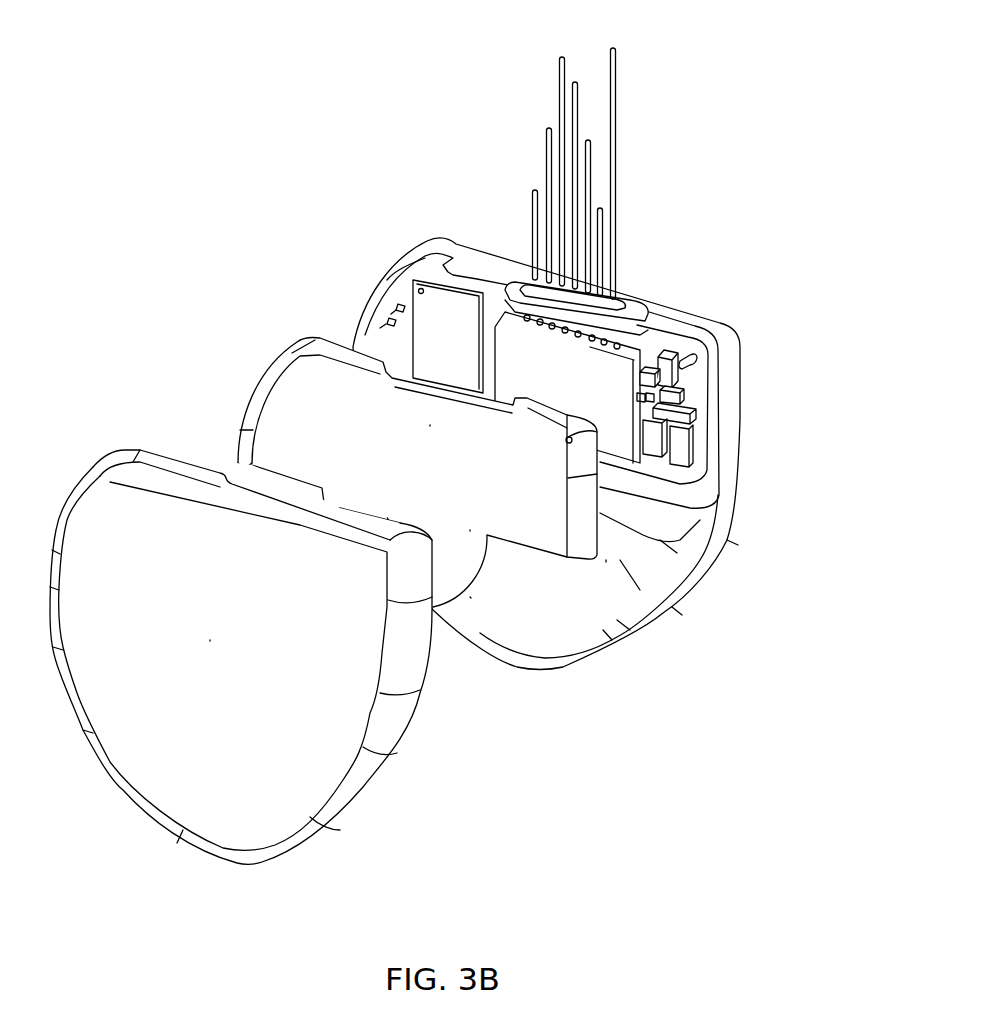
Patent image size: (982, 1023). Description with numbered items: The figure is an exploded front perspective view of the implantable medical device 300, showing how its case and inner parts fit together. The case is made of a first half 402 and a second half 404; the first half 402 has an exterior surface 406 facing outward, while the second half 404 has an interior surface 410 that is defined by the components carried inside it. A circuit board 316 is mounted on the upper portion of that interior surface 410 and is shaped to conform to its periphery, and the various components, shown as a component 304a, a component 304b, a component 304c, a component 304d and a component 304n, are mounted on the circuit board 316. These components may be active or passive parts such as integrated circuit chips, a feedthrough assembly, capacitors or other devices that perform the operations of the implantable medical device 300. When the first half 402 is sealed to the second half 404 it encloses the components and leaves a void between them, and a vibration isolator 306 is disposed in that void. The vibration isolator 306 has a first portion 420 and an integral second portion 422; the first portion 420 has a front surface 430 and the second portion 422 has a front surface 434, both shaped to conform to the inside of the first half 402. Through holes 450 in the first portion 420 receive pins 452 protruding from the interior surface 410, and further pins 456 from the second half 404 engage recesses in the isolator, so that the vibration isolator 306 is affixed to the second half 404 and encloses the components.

The implantable medical device 300 is at (772, 137).
The vibration isolator 306 is at (604, 528).
The component 304a is at (423, 314).
The component 304b is at (520, 353).
The component 304c is at (680, 447).
The component 304d is at (668, 373).
The component 304n is at (632, 293).
The circuit board 316 is at (700, 396).
The first half 402 is at (97, 457).
The second half 404 is at (410, 253).
The exterior surface 406 is at (231, 683).
The interior surface 410 is at (611, 594).
The first portion 420 is at (262, 356).
The second portion 422 is at (470, 596).
The front surface 430 is at (430, 472).
The front surface 434 is at (478, 561).
The through holes 450 is at (707, 477).
The pins 452 is at (692, 356).
The pins 456 is at (380, 322).